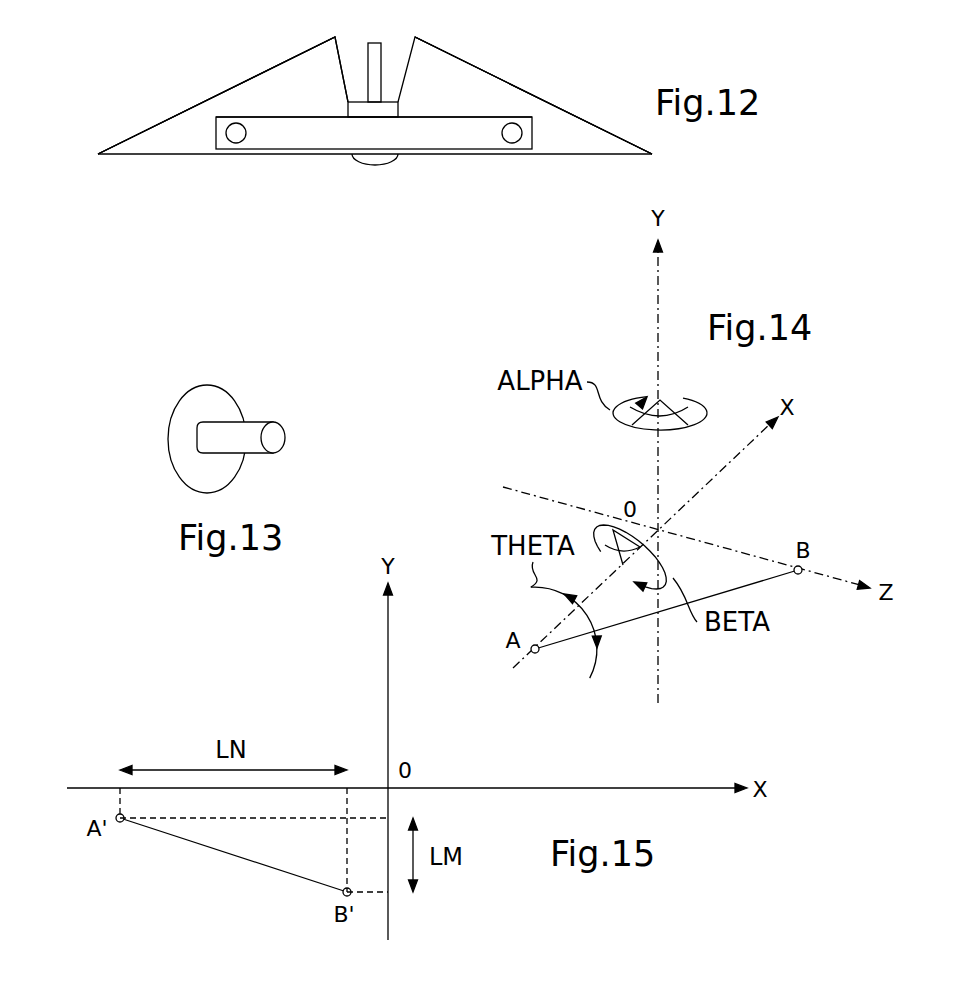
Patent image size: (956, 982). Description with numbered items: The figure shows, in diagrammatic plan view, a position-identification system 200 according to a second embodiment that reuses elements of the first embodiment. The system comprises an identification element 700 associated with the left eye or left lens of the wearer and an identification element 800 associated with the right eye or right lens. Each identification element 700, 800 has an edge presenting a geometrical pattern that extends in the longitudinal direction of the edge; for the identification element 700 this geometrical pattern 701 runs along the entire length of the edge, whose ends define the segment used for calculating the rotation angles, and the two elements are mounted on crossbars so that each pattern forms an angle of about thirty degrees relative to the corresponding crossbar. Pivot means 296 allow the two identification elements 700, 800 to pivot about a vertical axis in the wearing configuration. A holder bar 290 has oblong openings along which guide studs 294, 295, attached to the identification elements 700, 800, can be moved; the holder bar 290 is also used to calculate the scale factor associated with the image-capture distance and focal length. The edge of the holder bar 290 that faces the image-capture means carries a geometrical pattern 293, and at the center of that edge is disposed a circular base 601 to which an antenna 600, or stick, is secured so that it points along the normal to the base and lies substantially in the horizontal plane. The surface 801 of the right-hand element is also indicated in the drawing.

In FIG. 12, the position-identification system 200 is at (152, 164).
In FIG. 12, the identification element 800 is at (268, 83).
In FIG. 12, the first outer surface 801 is at (212, 97).
In FIG. 12, the identification element 700 is at (458, 67).
In FIG. 12, the geometrical pattern 701 is at (548, 98).
In FIG. 12, the antenna 600 is at (380, 43).
In FIG. 13, the antenna 600 is at (253, 422).
In FIG. 12, the circular base 601 is at (400, 116).
In FIG. 13, the circular base 601 is at (203, 392).
In FIG. 12, the holder bar 290 is at (463, 137).
In FIG. 12, the geometrical pattern 293 is at (301, 113).
In FIG. 12, the guide stud 294 is at (518, 142).
In FIG. 12, the guide stud 295 is at (243, 142).
In FIG. 12, the pivot means 296 is at (393, 165).